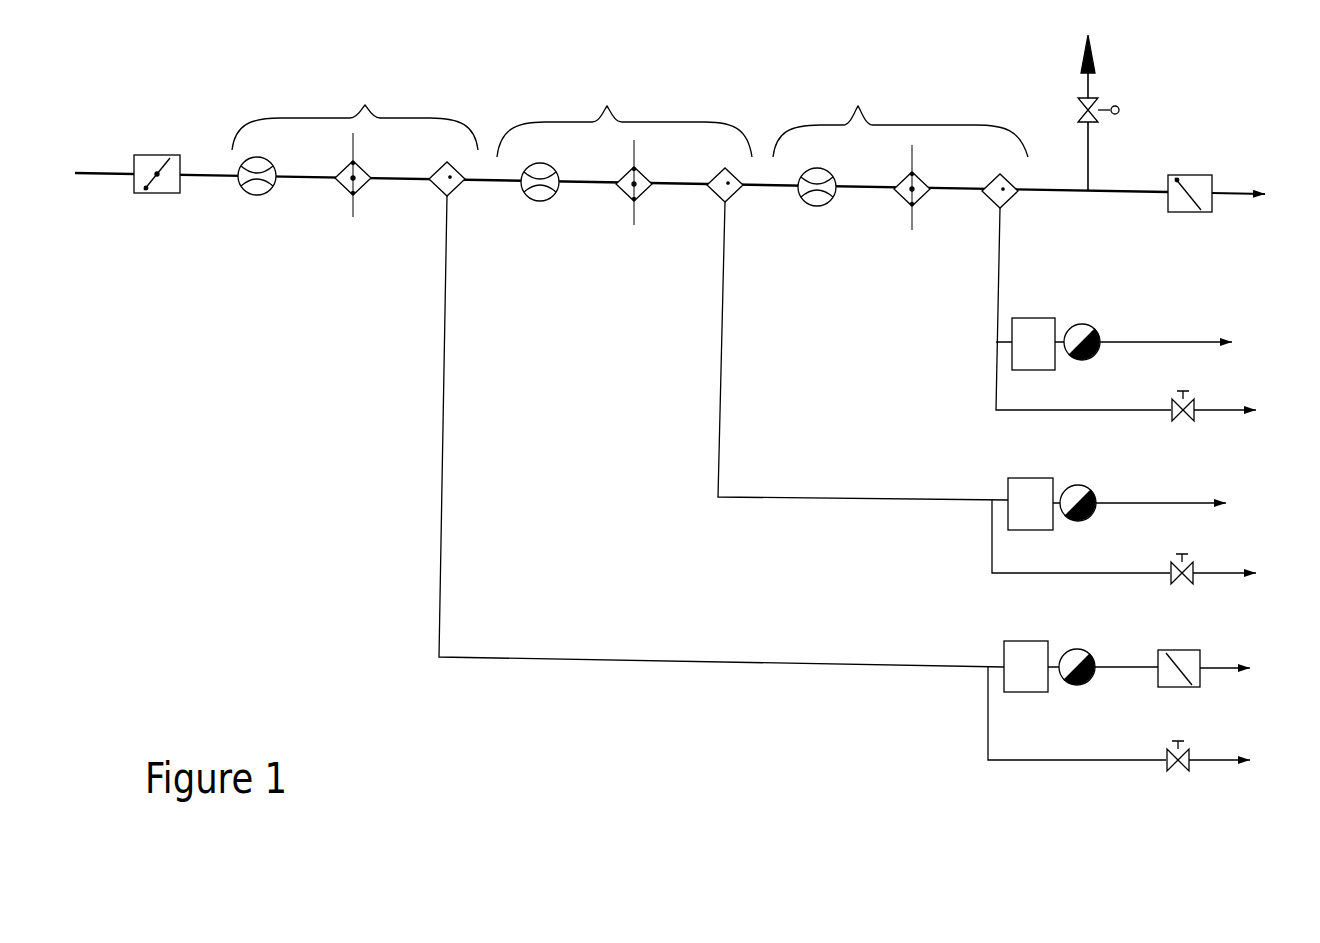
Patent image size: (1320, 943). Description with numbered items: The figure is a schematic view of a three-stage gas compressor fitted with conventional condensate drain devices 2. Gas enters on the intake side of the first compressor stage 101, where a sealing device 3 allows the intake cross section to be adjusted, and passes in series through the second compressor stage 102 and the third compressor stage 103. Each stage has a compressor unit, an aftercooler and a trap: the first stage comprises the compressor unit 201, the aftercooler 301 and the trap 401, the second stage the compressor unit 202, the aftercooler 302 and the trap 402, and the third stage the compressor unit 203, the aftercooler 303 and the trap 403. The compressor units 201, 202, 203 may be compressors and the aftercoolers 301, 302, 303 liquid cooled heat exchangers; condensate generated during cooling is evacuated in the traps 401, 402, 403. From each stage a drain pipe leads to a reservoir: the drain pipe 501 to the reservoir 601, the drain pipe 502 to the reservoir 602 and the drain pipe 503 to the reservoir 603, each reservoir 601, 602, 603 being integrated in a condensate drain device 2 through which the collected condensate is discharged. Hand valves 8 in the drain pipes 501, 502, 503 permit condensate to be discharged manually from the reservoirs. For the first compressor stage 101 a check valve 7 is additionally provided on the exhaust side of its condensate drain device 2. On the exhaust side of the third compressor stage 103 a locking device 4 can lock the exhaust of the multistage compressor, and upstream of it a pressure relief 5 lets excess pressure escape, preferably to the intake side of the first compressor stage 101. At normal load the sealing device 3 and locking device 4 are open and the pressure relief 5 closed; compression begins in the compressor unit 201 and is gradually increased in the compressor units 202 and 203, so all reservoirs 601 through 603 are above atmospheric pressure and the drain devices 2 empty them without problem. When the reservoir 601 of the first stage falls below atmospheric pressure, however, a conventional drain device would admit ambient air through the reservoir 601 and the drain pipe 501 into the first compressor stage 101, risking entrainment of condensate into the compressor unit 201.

The condensate drain device 2 is at (1110, 330).
The sealing device 3 is at (143, 158).
The locking device 4 is at (1196, 185).
The pressure relief 5 is at (1106, 100).
The check valve 7 is at (1196, 660).
The hand valve 8 is at (1186, 423).
The first compressor stage 101 is at (355, 97).
The second compressor stage 102 is at (624, 104).
The third compressor stage 103 is at (900, 104).
The compressor unit 201 is at (258, 190).
The compressor unit 202 is at (540, 198).
The compressor unit 203 is at (818, 203).
The aftercooler 301 is at (357, 195).
The aftercooler 302 is at (645, 200).
The aftercooler 303 is at (920, 195).
The trap 401 is at (462, 185).
The trap 402 is at (735, 195).
The trap 403 is at (1005, 195).
The drain pipe 501 is at (433, 557).
The drain pipe 502 is at (713, 412).
The drain pipe 503 is at (986, 385).
The reservoir 601 is at (1022, 665).
The reservoir 602 is at (1025, 500).
The reservoir 603 is at (1035, 340).